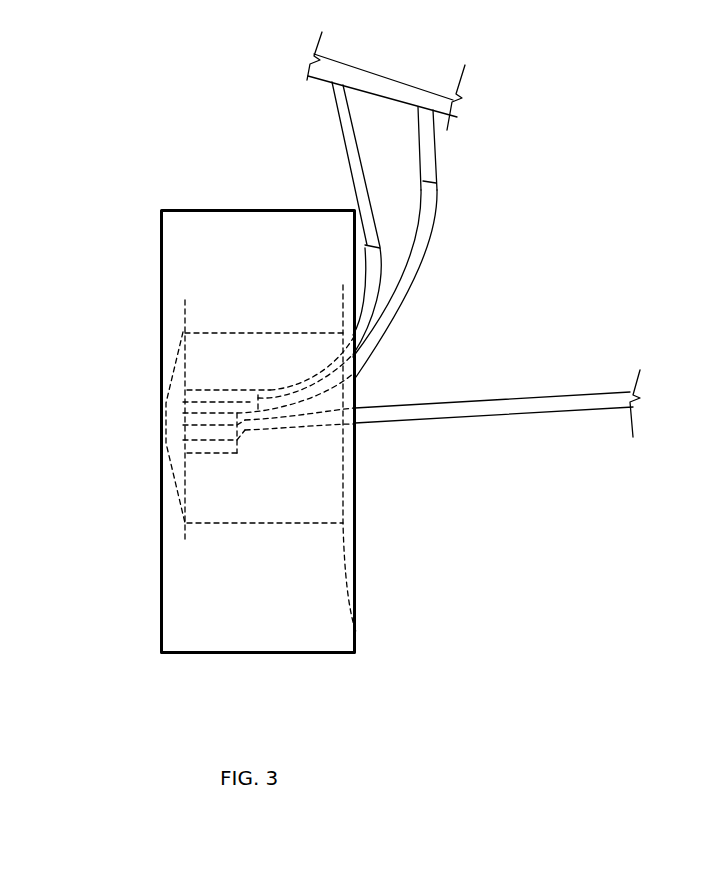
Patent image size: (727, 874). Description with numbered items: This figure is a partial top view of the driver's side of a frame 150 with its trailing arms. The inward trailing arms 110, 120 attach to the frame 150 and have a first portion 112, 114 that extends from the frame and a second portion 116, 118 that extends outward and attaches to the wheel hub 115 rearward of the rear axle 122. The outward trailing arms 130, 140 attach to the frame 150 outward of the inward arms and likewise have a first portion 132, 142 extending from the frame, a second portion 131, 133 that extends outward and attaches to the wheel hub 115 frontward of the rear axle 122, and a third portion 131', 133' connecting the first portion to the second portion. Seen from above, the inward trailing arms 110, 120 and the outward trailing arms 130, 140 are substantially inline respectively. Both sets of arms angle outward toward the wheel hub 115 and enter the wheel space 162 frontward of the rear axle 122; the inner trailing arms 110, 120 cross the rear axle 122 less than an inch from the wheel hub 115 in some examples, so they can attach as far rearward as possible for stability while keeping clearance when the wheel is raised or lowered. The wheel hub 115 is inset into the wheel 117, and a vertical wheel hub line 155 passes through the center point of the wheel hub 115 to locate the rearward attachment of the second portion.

The drivers side inward trailing arm 110 is at (524, 234).
The drivers side inward trailing arm 120 is at (449, 190).
The first portion of inward trailing arm 112 is at (555, 140).
The first portion of inward trailing arm 114 is at (438, 150).
The second portion of inward trailing arm 116 is at (494, 283).
The second portion of inward trailing arm 118 is at (434, 253).
The drivers side outward trailing arm 130 is at (231, 214).
The drivers side outward trailing arm 140 is at (330, 110).
The first portion of outward trailing arm 132 is at (231, 166).
The first portion of outward trailing arm 142 is at (343, 152).
The second portion of outward trailing arm 131 is at (163, 320).
The second portion of outward trailing arm 133 is at (163, 320).
The third portion of outward trailing arm 131' is at (247, 298).
The third portion of outward trailing arm 133' is at (247, 298).
The frame 150 is at (381, 85).
The wheel hub 115 is at (183, 450).
The wheel 117 is at (233, 654).
The rear axle 122 is at (613, 410).
The vertical wheel hub line 155 is at (185, 540).
The wheel space 162 is at (303, 490).